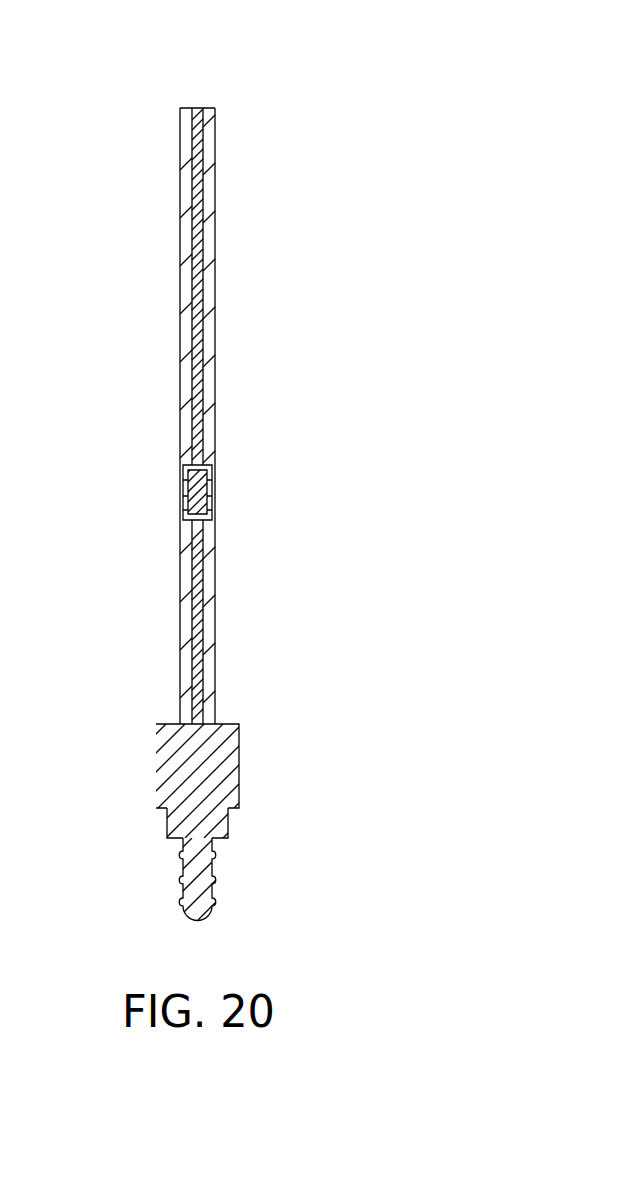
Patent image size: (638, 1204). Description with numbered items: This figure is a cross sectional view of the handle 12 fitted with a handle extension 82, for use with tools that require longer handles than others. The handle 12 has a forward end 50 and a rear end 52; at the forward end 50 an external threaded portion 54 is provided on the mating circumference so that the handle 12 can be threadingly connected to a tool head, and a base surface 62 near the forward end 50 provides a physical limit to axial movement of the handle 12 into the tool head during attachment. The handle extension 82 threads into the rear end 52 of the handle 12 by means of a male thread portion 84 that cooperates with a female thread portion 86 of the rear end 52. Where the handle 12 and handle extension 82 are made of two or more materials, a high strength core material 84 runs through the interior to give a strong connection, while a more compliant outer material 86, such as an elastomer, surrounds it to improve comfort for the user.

The handle 12 is at (250, 108).
The forward end 50 is at (232, 745).
The rear end 52 is at (205, 553).
The external threaded portion 54 is at (212, 878).
The base surface 62 is at (159, 809).
The handle extension 82 is at (210, 245).
The male thread portion 84 is at (198, 190).
The female thread portion 86 is at (212, 395).